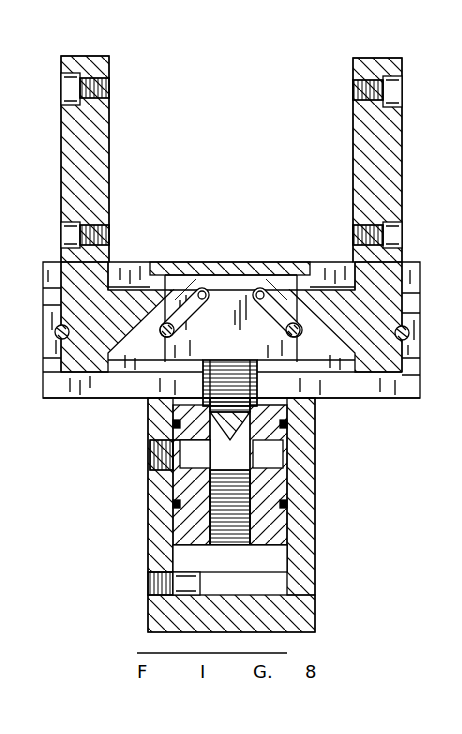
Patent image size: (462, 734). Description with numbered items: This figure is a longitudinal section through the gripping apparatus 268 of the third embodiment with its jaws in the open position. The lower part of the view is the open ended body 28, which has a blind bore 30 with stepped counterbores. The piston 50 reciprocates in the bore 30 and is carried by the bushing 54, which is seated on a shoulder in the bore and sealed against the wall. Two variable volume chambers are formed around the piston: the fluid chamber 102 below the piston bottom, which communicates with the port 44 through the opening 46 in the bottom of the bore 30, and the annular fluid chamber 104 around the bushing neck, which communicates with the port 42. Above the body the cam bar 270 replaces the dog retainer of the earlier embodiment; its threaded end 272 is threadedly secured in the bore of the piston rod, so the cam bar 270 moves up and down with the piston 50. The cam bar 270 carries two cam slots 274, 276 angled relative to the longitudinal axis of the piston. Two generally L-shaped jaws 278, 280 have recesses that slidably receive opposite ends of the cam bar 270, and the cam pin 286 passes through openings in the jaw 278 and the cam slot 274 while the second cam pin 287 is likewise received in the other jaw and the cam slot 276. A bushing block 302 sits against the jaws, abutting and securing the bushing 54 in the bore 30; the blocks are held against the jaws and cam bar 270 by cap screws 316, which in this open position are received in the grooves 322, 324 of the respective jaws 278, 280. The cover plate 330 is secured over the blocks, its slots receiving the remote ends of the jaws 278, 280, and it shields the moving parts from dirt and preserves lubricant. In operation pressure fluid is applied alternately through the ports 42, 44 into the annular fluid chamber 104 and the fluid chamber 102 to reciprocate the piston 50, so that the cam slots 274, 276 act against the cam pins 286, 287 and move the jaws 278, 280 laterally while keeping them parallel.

The gripping apparatus 268 is at (419, 63).
The jaw 278 is at (110, 115).
The jaw 280 is at (352, 135).
The cover plate 330 is at (160, 262).
The groove 322 is at (108, 317).
The groove 324 is at (399, 328).
The cam bar 270 is at (233, 286).
The cam slot 274 is at (202, 288).
The cam slot 276 is at (262, 288).
The cam pin 286 is at (172, 332).
The cam pin 287 is at (290, 339).
The cap screw 316 is at (68, 334).
The bushing block 302 is at (380, 400).
The threaded end 272 is at (258, 388).
The body 28 is at (316, 598).
The fluid chamber 102 is at (272, 558).
The annular fluid chamber 104 is at (285, 456).
The bushing 54 is at (163, 433).
The port 42 is at (152, 462).
The piston 50 is at (175, 496).
The blind bore 30 is at (172, 561).
The opening 46 is at (194, 567).
The port 44 is at (160, 589).